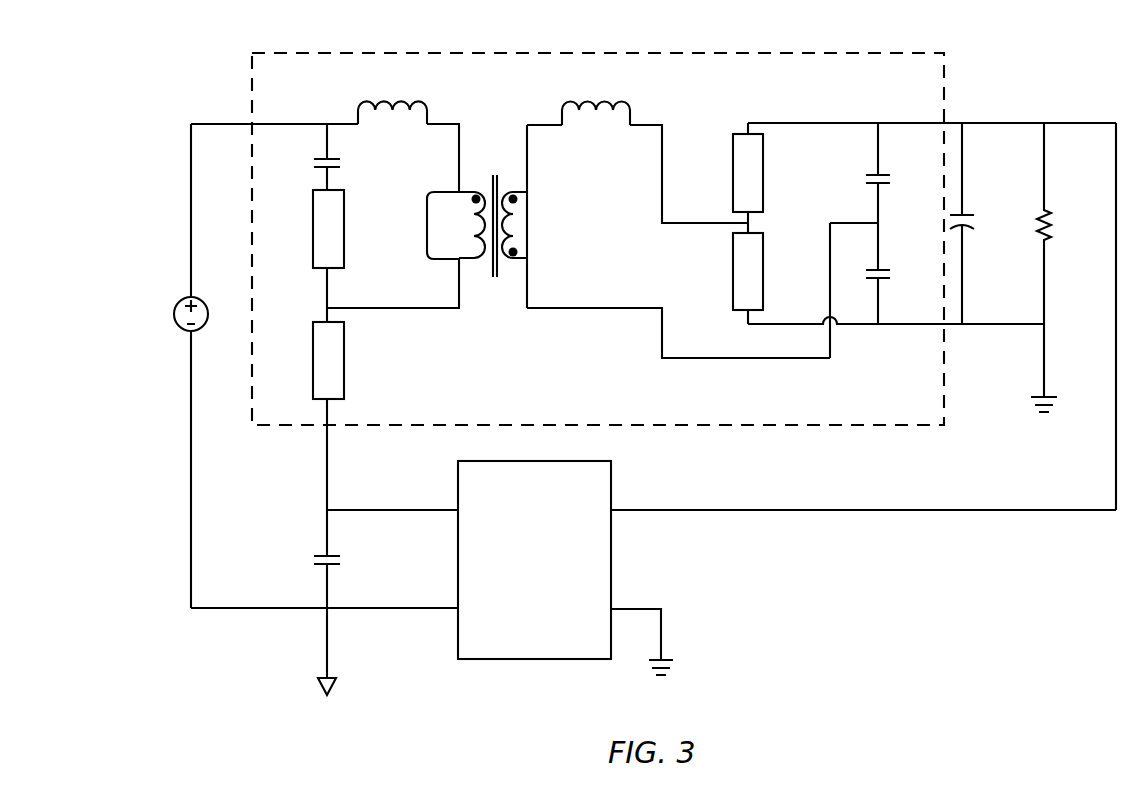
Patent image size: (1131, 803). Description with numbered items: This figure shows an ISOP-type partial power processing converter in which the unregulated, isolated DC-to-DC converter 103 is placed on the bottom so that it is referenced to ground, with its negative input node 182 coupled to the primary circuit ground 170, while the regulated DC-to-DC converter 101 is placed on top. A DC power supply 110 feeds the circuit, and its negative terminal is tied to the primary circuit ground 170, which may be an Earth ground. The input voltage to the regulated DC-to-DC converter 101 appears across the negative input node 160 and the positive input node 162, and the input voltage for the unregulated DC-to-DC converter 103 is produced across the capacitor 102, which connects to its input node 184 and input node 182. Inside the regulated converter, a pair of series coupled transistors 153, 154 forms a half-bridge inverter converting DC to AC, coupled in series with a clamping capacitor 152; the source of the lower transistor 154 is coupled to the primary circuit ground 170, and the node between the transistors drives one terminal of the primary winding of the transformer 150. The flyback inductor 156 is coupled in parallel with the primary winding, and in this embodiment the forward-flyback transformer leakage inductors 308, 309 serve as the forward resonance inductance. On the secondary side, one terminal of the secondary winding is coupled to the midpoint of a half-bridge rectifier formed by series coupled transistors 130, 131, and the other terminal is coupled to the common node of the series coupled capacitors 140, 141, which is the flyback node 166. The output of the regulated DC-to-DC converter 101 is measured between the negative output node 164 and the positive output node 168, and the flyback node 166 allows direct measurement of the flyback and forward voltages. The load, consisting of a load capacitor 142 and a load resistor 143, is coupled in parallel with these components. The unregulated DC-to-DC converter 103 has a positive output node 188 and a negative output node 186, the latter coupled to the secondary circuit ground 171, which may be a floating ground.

The regulated DC-to-DC converter 101 is at (837, 53).
The capacitor 102 is at (336, 563).
The unregulated DC-to-DC converter 103 is at (595, 460).
The DC power supply 110 is at (181, 300).
The transistor 130 is at (765, 153).
The transistor 131 is at (764, 255).
The capacitor 140 is at (886, 172).
The capacitor 141 is at (883, 266).
The load capacitor 142 is at (970, 214).
The load resistor 143 is at (1049, 212).
The transformer 150 is at (494, 278).
The clamping capacitor 152 is at (321, 156).
The transistor 153 is at (345, 255).
The transistor 154 is at (345, 378).
The flyback inductor 156 is at (428, 192).
The negative input node 160 is at (329, 411).
The positive input node 162 is at (300, 123).
The negative output node 164 is at (926, 328).
The flyback node 166 is at (831, 221).
The positive output node 168 is at (912, 122).
The primary circuit ground 170 is at (322, 694).
The secondary circuit ground 171 is at (673, 654).
The negative input node 182 is at (415, 606).
The positive input node 184 is at (415, 509).
The negative output node 186 is at (617, 606).
The positive output node 188 is at (617, 509).
The forward-flyback transformer leakage inductor 308 is at (418, 97).
The forward-flyback transformer leakage inductor 309 is at (618, 98).